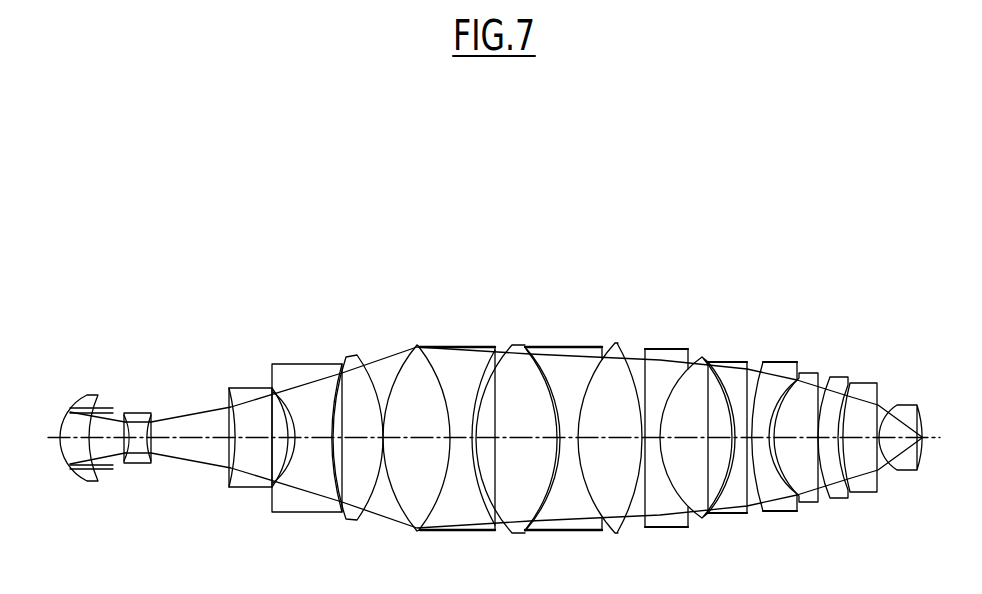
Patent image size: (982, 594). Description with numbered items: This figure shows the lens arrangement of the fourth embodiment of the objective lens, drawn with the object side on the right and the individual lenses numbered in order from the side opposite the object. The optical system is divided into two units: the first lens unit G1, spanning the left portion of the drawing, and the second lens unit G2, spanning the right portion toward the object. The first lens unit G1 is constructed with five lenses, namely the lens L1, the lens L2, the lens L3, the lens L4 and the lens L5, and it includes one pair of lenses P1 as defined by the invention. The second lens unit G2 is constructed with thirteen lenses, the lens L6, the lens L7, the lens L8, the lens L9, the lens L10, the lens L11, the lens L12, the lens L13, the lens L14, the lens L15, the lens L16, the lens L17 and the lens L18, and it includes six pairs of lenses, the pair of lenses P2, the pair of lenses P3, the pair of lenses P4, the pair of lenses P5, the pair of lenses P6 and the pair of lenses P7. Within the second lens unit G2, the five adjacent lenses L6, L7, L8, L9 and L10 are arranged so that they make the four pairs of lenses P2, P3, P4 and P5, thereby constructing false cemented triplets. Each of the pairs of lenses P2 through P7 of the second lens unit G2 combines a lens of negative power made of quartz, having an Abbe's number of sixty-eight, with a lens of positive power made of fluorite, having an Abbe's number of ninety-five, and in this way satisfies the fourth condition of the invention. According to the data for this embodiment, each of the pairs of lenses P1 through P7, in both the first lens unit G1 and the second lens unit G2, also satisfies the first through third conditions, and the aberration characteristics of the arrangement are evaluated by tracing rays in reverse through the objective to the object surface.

The first lens unit G1 is at (62, 287).
The second lens unit G2 is at (923, 287).
The lens L1 is at (65, 390).
The lens L2 is at (125, 413).
The lens L3 is at (247, 387).
The lens L4 is at (300, 370).
The lens L5 is at (365, 358).
The lens L6 is at (410, 347).
The lens L7 is at (453, 352).
The lens L8 is at (505, 348).
The lens L9 is at (553, 352).
The lens L10 is at (612, 345).
The lens L11 is at (657, 348).
The lens L12 is at (700, 355).
The lens L13 is at (728, 358).
The lens L14 is at (770, 362).
The lens L15 is at (803, 371).
The lens L16 is at (842, 375).
The lens L17 is at (872, 382).
The lens L18 is at (907, 403).
The pair of lenses P1 is at (343, 564).
The pair of lenses P2 is at (421, 564).
The pair of lenses P3 is at (495, 564).
The pair of lenses P4 is at (532, 564).
The pair of lenses P5 is at (602, 564).
The pair of lenses P6 is at (691, 564).
The pair of lenses P7 is at (723, 564).